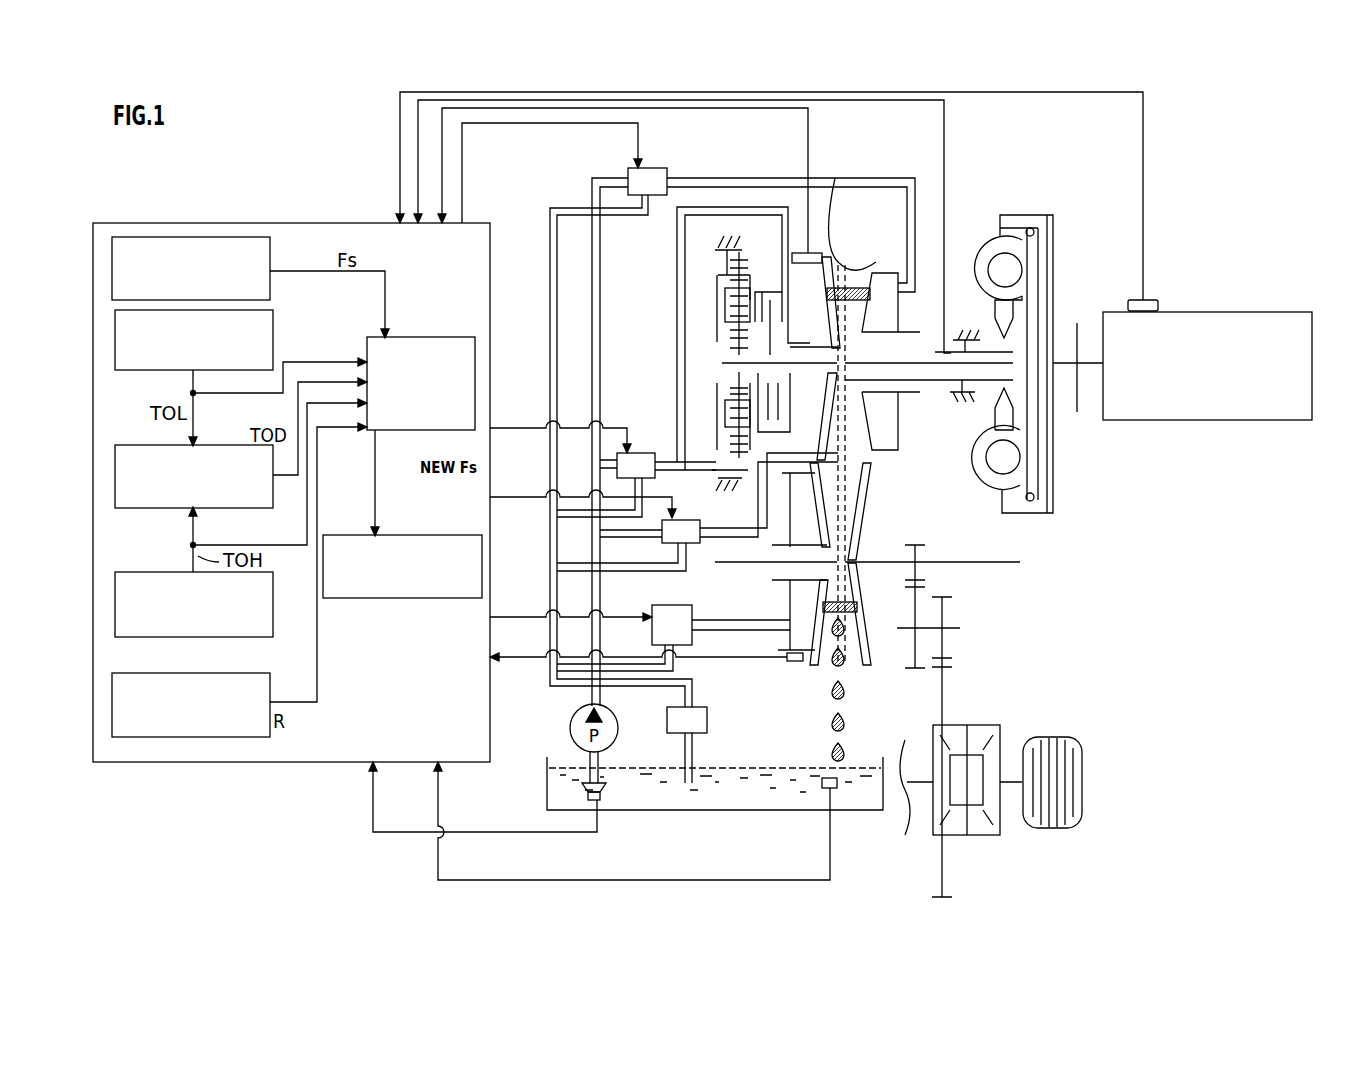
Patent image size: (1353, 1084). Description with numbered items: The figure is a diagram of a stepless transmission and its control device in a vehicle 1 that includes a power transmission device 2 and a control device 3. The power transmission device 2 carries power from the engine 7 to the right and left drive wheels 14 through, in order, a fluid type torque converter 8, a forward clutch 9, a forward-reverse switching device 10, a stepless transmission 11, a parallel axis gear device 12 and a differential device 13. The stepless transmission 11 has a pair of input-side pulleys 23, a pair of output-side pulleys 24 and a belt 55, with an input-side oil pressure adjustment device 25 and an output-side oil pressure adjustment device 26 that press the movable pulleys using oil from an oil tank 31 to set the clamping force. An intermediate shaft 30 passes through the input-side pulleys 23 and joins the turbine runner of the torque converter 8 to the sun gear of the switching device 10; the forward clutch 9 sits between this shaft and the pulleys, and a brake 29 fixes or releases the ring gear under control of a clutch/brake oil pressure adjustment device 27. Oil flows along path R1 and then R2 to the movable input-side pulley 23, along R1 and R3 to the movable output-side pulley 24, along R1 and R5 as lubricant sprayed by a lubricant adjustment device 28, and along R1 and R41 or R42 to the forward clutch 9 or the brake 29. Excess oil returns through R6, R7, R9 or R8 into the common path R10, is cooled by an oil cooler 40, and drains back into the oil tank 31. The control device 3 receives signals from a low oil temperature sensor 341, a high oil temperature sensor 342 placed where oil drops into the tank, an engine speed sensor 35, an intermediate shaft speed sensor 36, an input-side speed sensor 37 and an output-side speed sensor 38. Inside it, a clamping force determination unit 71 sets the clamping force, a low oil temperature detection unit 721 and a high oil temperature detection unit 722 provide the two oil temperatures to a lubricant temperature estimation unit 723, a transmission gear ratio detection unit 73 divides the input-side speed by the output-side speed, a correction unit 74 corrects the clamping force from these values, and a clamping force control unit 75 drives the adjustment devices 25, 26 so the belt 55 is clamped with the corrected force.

The vehicle 1 is at (278, 199).
The power transmission device 2 is at (1097, 467).
The control device 3 is at (150, 224).
The engine 7 is at (1224, 312).
The fluid type torque converter 8 is at (1028, 214).
The forward clutch 9 is at (770, 292).
The forward-reverse switching device 10 is at (715, 298).
The stepless transmission 11 is at (862, 252).
The parallel axis gear device 12 is at (957, 617).
The differential device 13 is at (1001, 725).
The drive wheels 14 is at (1052, 830).
The input-side pulleys 23 is at (830, 262).
The output-side pulleys 24 is at (840, 640).
The input-side oil pressure adjustment device 25 is at (648, 167).
The output-side oil pressure adjustment device 26 is at (685, 605).
The clutch/brake oil pressure adjustment device 27 is at (645, 452).
The lubricant adjustment device 28 is at (689, 519).
The brake 29 is at (714, 258).
The intermediate shaft 30 is at (812, 357).
The oil tank 31 is at (812, 812).
The engine speed sensor 35 is at (1145, 298).
The intermediate shaft speed sensor 36 is at (944, 372).
The input-side speed sensor 37 is at (820, 252).
The output-side speed sensor 38 is at (787, 664).
The oil cooler 40 is at (673, 734).
The belt 55 is at (873, 266).
The clamping force determination unit 71 is at (270, 238).
The transmission gear ratio detection unit 73 is at (140, 738).
The correction unit 74 is at (448, 338).
The clamping force control unit 75 is at (448, 600).
The low oil temperature sensor 341 is at (602, 792).
The high oil temperature sensor 342 is at (838, 788).
The low oil temperature detection unit 721 is at (115, 371).
The high oil temperature detection unit 722 is at (115, 638).
The lubricant temperature estimation unit 723 is at (115, 509).
The oil path R1 is at (586, 640).
The oil path R2 is at (722, 177).
The oil path R3 is at (740, 620).
The oil path R5 is at (758, 528).
The oil path R6 is at (556, 205).
The oil path R7 is at (637, 684).
The oil path R8 is at (571, 519).
The oil path R9 is at (605, 571).
The oil path R10 is at (548, 683).
The oil path R41 is at (676, 372).
The oil path R42 is at (697, 458).